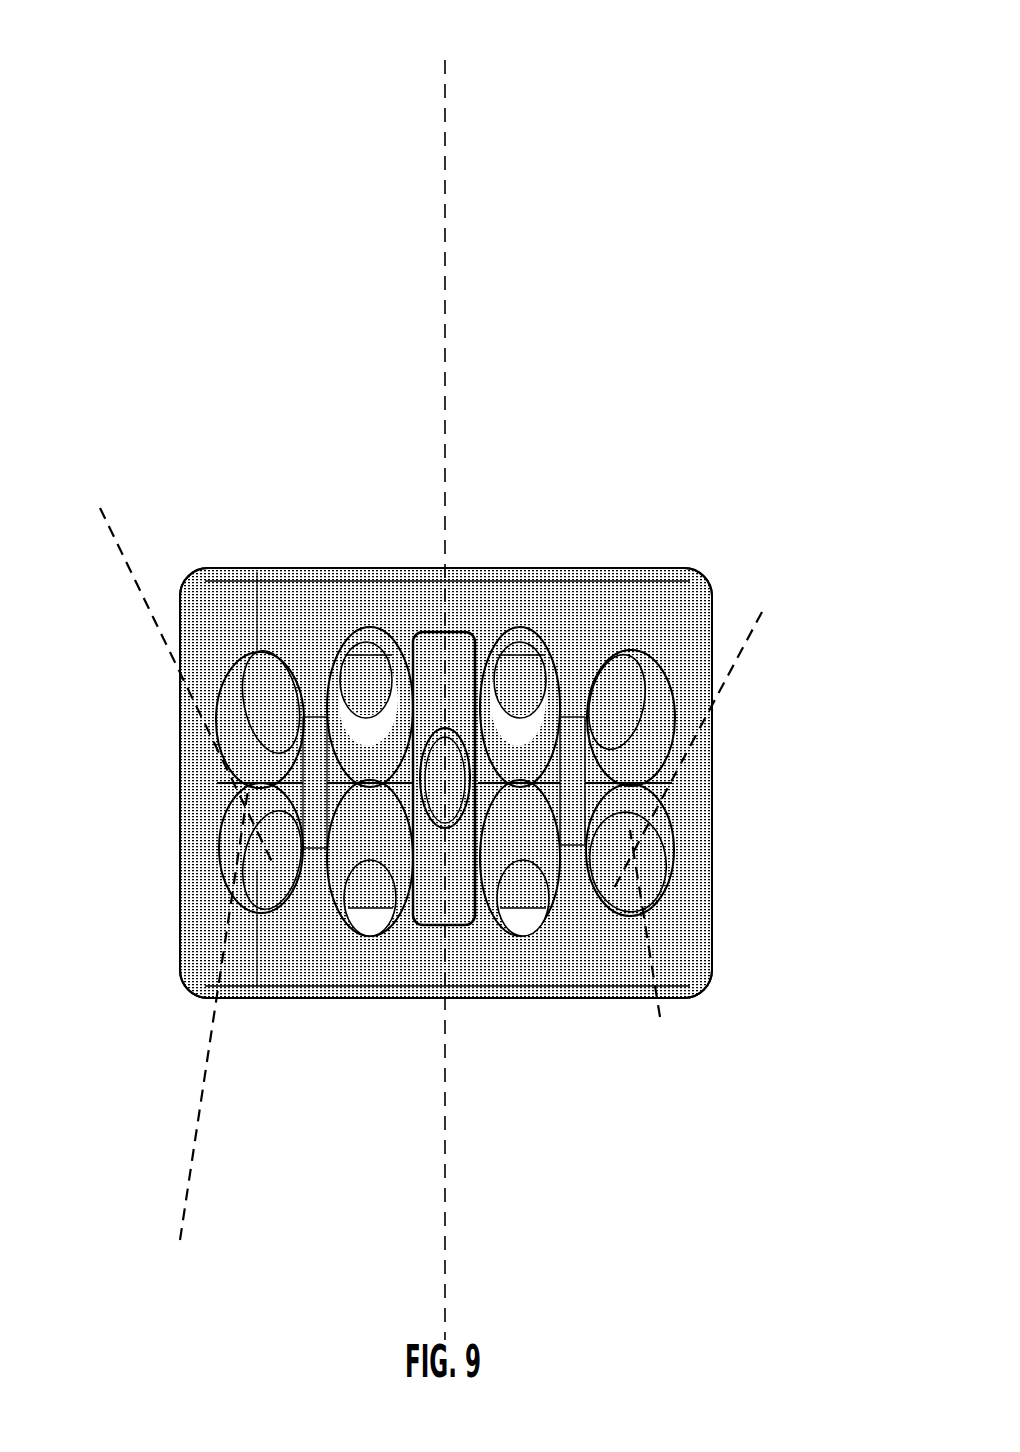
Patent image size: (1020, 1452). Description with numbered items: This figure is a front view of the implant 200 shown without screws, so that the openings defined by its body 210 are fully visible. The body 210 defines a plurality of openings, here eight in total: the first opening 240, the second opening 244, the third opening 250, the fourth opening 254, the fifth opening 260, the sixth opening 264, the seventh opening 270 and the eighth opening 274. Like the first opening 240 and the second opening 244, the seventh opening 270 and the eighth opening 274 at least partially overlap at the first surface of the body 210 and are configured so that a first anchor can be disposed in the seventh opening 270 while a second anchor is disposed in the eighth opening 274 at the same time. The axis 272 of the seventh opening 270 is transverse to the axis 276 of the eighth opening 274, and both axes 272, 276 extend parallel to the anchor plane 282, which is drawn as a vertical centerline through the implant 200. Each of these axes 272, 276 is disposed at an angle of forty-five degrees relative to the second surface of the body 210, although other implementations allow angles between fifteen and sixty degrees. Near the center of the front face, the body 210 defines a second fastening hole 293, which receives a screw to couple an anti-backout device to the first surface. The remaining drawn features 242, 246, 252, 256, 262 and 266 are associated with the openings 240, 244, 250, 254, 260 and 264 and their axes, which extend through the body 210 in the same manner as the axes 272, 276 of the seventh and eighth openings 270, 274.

The implant 200 is at (183, 230).
The body 210 is at (237, 620).
The first opening 240 is at (393, 713).
The first channel upper opening 242 is at (364, 693).
The second opening 244 is at (370, 915).
The first channel lower bore 246 is at (367, 863).
The third opening 250 is at (553, 670).
The second channel upper opening 252 is at (520, 657).
The fourth opening 254 is at (525, 910).
The second channel lower bore 256 is at (523, 863).
The fifth opening 260 is at (284, 715).
The third channel lower axis 262 is at (181, 1242).
The sixth opening 264 is at (287, 835).
The third channel upper axis 266 is at (123, 560).
The seventh opening 270 is at (632, 657).
The axis of the seventh opening 272 is at (657, 1017).
The eighth opening 274 is at (610, 840).
The axis of the eighth opening 276 is at (760, 612).
The anchor plane 282 is at (447, 185).
The second fastening hole 293 is at (478, 707).